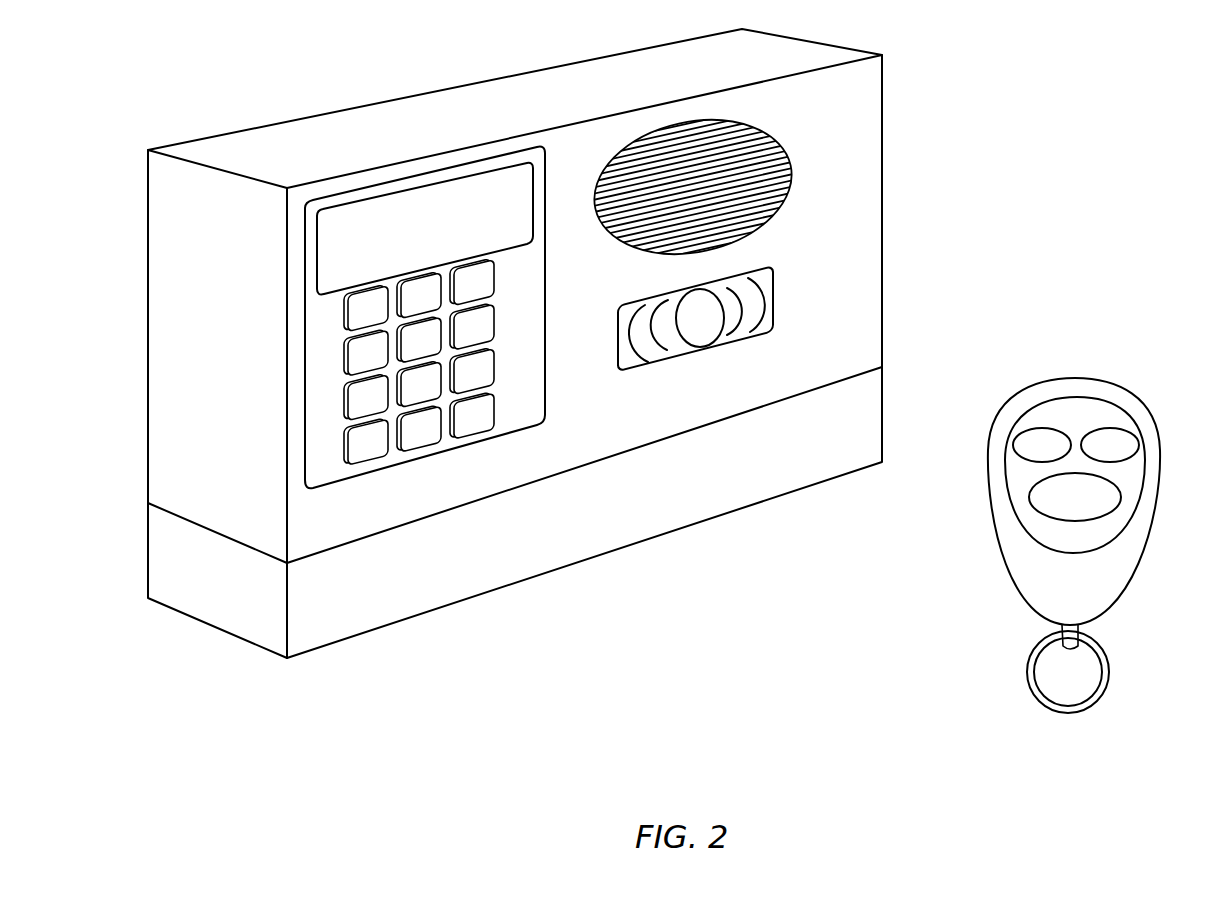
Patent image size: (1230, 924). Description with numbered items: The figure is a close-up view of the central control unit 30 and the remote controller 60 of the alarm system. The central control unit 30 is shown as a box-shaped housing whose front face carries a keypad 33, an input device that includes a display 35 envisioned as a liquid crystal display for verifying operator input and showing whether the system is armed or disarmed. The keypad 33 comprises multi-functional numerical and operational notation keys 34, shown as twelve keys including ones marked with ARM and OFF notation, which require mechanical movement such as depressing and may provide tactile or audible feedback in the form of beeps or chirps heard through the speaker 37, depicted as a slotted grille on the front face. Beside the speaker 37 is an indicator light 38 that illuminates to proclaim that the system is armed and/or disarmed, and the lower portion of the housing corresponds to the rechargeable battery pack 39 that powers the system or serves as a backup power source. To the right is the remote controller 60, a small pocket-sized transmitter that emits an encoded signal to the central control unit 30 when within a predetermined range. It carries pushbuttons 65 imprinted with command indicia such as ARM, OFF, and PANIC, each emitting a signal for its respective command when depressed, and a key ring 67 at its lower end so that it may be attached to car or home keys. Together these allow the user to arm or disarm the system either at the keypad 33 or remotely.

The central control unit 30 is at (575, 148).
The keypad 33 is at (309, 510).
The keys 34 is at (362, 358).
The display 35 is at (380, 222).
The speaker 37 is at (780, 147).
The indicator light 38 is at (762, 310).
The rechargeable battery pack 39 is at (645, 472).
The remote controller 60 is at (1097, 390).
The pushbuttons 65 is at (1063, 448).
The key ring 67 is at (1075, 705).